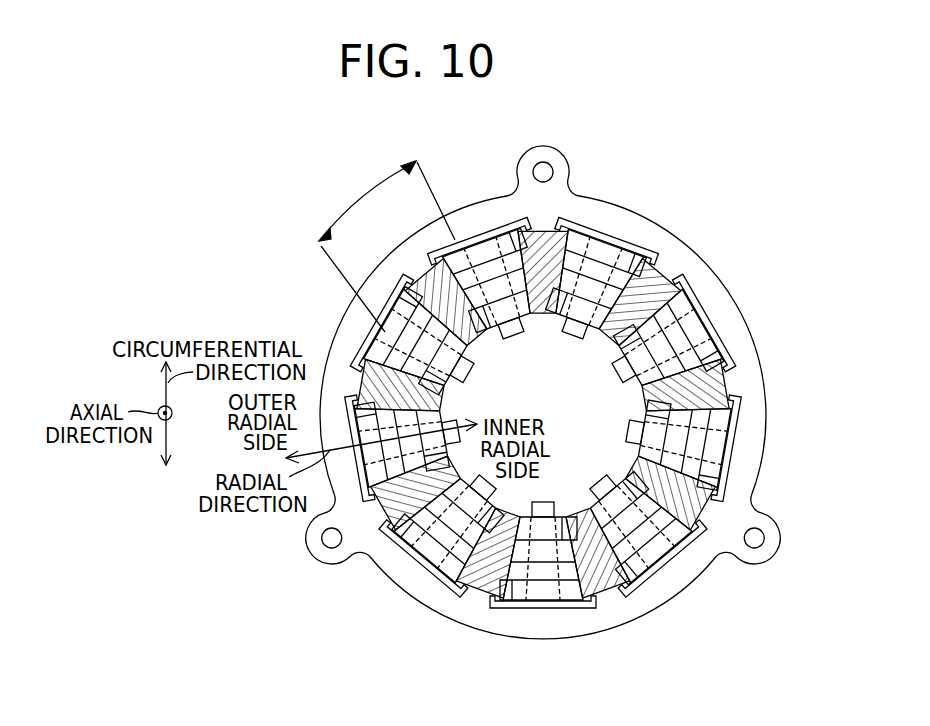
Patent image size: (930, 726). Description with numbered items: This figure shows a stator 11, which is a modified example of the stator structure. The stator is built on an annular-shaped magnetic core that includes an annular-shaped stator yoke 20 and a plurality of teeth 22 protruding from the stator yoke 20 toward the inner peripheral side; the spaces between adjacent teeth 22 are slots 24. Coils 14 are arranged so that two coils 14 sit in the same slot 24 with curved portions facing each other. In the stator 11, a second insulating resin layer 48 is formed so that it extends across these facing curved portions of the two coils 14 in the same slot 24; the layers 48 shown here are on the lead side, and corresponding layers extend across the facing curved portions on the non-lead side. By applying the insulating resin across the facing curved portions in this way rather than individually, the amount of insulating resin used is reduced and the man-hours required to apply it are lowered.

The stator 11 is at (272, 267).
The coil 14 is at (527, 312).
The stator yoke 20 is at (480, 213).
The tooth 22 is at (507, 334).
The slot 24 is at (387, 246).
The second insulating resin layer 48 is at (565, 218).